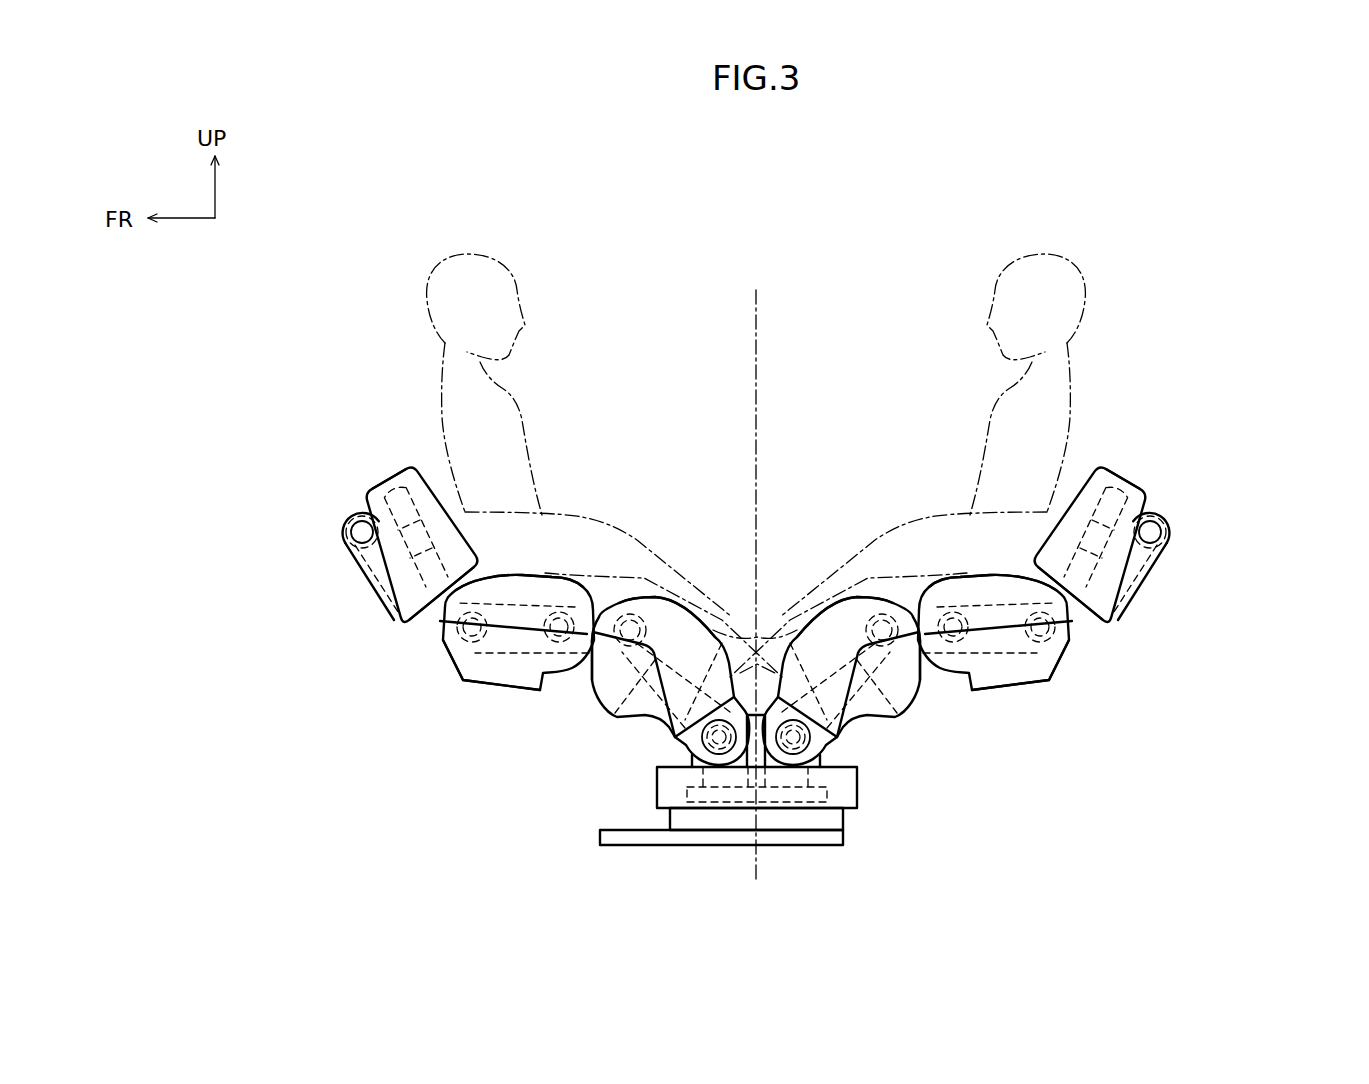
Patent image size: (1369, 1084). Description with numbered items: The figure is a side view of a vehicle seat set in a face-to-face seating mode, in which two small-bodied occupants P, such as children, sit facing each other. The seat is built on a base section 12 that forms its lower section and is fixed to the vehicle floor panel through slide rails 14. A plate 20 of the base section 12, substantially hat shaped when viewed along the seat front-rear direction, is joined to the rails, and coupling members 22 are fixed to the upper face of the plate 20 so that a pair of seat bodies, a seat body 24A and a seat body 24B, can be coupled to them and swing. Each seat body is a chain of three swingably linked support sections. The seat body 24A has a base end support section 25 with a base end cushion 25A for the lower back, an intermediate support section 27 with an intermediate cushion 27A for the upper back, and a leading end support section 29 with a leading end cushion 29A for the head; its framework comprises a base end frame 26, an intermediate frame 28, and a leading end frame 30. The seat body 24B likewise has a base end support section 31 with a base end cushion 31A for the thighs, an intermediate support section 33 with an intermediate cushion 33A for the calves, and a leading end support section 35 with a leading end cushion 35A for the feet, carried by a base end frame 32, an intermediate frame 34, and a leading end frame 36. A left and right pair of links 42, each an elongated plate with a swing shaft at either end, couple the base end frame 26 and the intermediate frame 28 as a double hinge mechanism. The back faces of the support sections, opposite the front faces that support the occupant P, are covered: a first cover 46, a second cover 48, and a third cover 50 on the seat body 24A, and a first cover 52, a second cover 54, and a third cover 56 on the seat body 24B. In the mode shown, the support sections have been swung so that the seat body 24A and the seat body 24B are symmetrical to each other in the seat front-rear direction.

The base section 12 is at (848, 818).
The slide rails 14 is at (833, 850).
The plate 20 is at (670, 814).
The coupling members 22 is at (823, 743).
The seat body 24A is at (1139, 625).
The seat body 24B is at (439, 688).
The base end support section 25 is at (813, 612).
The base end cushion 25A is at (837, 597).
The base end frame 26 is at (855, 695).
The intermediate support section 27 is at (953, 573).
The intermediate cushion 27A is at (980, 568).
The intermediate frame 28 is at (1027, 655).
The leading end support section 29 is at (1147, 489).
The leading end cushion 29A is at (1122, 477).
The leading end frame 30 is at (1158, 558).
The base end support section 31 is at (641, 592).
The base end cushion 31A is at (701, 614).
The base end frame 32 is at (660, 698).
The intermediate support section 33 is at (522, 569).
The intermediate cushion 33A is at (547, 573).
The intermediate frame 34 is at (485, 655).
The leading end support section 35 is at (393, 476).
The leading end cushion 35A is at (372, 490).
The leading end frame 36 is at (369, 579).
The links 42 is at (971, 644).
The first cover 46 is at (913, 673).
The second cover 48 is at (1058, 655).
The third cover 50 is at (1172, 541).
The first cover 52 is at (599, 678).
The second cover 54 is at (511, 689).
The third cover 56 is at (383, 603).
The occupant P is at (1072, 262).